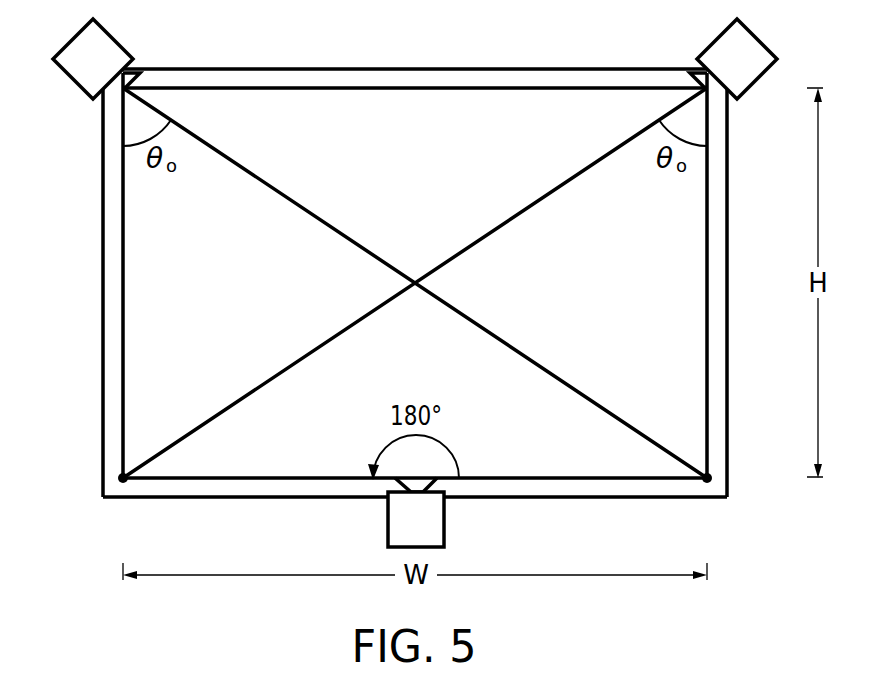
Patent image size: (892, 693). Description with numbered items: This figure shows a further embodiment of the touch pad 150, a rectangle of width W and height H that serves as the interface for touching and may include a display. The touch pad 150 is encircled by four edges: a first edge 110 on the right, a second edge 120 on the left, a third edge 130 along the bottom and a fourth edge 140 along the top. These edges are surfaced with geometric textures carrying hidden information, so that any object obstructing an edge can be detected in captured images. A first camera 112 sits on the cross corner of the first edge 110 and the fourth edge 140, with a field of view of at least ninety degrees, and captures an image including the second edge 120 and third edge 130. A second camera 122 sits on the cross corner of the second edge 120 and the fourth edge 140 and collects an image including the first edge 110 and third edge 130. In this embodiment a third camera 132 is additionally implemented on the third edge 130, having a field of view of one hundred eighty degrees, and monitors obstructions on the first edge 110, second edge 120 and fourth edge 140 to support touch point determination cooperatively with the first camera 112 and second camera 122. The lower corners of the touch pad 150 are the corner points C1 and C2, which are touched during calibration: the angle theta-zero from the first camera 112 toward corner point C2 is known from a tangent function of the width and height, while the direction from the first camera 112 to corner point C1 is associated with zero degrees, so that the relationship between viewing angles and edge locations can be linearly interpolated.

The first edge 110 is at (722, 279).
The first camera 112 is at (713, 42).
The second edge 120 is at (112, 280).
The second camera 122 is at (113, 36).
The third edge 130 is at (566, 492).
The third camera 132 is at (388, 520).
The fourth edge 140 is at (413, 74).
The touch pad 150 is at (393, 198).
The corner point C1 is at (728, 478).
The corner point C2 is at (117, 478).